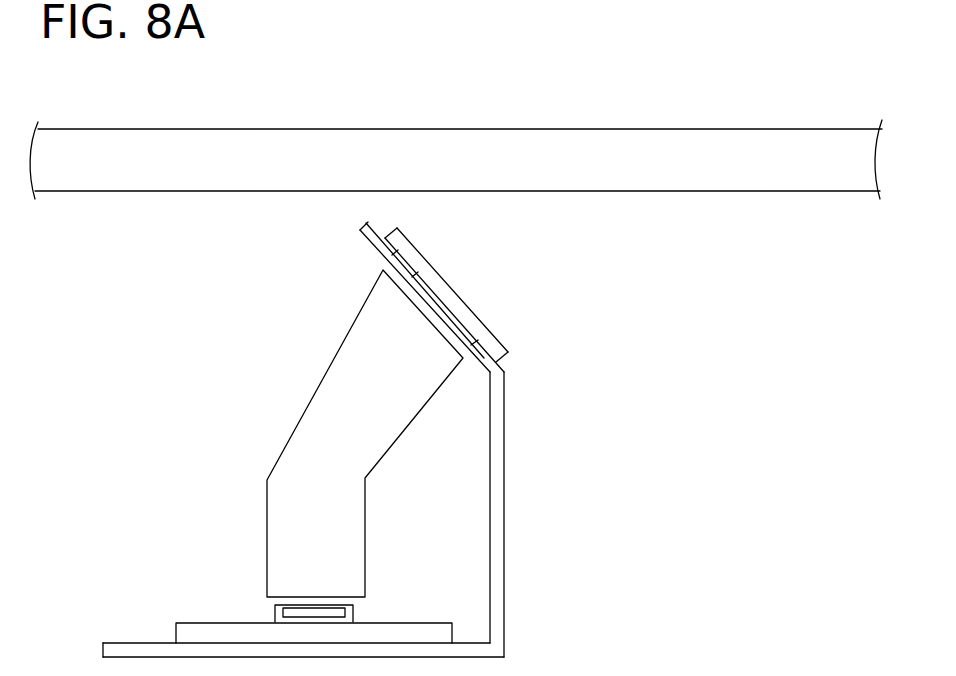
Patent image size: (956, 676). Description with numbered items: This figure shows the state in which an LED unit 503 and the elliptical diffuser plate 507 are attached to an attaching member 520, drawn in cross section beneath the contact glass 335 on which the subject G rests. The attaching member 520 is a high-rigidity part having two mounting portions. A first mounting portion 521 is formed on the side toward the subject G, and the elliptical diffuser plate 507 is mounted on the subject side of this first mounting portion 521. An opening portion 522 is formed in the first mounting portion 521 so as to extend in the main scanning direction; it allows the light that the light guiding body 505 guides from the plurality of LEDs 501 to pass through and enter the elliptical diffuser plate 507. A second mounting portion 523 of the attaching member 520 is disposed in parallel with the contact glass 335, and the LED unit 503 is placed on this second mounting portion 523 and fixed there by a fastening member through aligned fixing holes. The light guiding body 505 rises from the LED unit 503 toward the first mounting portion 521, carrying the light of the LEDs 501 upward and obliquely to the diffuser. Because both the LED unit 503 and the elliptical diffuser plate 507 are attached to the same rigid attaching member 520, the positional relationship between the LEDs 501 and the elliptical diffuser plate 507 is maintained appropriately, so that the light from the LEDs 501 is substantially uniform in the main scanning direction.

The contact glass 335 is at (808, 137).
The subject G is at (427, 124).
The light guiding body 505 is at (300, 410).
The first mounting portion 521 is at (370, 238).
The opening portion 522 is at (386, 282).
The elliptical diffuser plate 507 is at (506, 342).
The attaching member 520 is at (505, 468).
The second mounting portion 523 is at (108, 648).
The LED unit 503 is at (178, 635).
The LEDs 501 is at (275, 615).